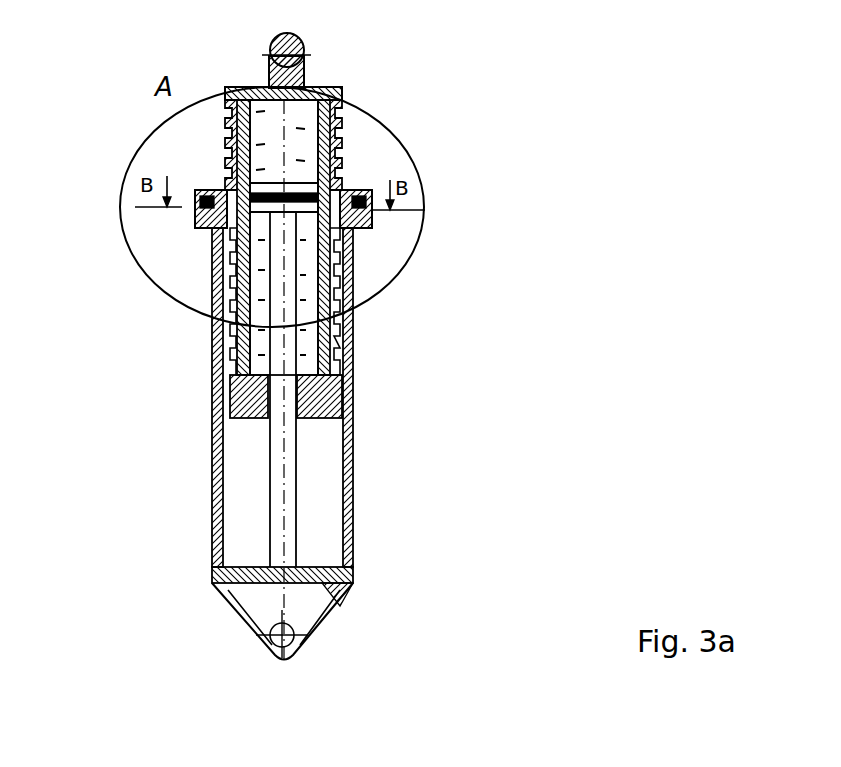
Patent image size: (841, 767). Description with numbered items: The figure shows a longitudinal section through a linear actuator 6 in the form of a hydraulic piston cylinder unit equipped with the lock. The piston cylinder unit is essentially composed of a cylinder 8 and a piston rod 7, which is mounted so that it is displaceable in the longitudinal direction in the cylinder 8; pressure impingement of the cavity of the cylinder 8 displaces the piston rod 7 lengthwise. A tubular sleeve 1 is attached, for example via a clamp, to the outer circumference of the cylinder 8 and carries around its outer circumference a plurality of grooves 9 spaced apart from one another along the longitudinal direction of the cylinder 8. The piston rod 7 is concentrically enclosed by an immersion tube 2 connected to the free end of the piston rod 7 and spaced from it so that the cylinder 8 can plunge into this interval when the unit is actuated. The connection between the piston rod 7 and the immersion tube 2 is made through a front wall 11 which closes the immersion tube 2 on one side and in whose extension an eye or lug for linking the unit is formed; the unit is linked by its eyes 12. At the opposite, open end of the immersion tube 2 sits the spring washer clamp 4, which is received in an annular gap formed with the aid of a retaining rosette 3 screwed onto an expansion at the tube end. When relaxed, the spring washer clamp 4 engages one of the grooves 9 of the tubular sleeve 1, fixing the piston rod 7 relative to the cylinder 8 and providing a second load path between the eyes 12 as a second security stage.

The tubular sleeve 1 is at (345, 133).
The immersion tube 2 is at (350, 412).
The retaining rosette 3 is at (366, 228).
The spring washer clamp 4 is at (352, 193).
The linear actuator 6 is at (498, 360).
The piston rod 7 is at (270, 503).
The cylinder 8 is at (335, 86).
The grooves 9 is at (186, 138).
The front wall 11 is at (214, 597).
The eyes 12 is at (286, 657).